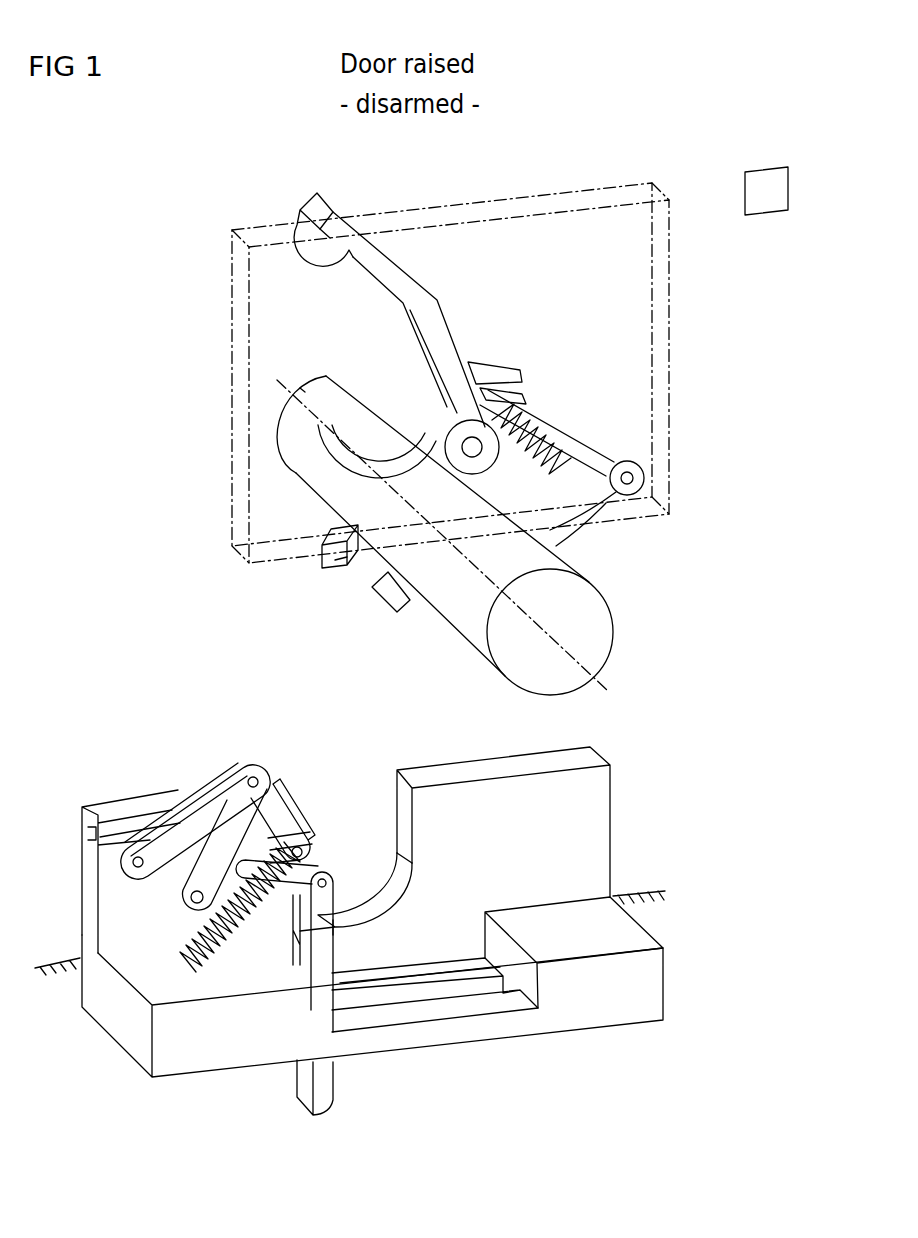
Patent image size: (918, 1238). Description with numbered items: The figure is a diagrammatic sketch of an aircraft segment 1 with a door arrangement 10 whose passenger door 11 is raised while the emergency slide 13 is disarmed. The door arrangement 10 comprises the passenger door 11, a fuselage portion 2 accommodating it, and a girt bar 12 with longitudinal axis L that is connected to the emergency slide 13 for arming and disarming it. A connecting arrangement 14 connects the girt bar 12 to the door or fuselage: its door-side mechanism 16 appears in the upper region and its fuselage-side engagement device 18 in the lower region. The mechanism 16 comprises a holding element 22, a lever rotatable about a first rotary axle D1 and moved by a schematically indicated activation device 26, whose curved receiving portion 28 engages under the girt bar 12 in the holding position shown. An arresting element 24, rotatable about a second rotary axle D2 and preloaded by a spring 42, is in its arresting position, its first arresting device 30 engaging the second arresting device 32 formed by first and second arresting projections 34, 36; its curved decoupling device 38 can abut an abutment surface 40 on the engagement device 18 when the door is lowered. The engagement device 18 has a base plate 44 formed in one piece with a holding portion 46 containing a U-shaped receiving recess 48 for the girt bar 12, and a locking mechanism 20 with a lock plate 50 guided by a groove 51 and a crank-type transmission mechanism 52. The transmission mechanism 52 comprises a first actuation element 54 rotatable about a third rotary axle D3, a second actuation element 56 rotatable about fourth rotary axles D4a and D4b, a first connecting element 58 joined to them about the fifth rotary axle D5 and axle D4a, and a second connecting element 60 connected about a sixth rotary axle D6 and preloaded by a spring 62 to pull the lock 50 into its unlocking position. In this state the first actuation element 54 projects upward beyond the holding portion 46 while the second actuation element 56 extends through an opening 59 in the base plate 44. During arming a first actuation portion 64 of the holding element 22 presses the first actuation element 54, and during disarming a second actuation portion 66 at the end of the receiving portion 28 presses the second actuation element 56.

The aircraft segment 1 is at (510, 320).
The fuselage portion 2 is at (667, 900).
The door arrangement 10 is at (476, 425).
The passenger door 11 is at (590, 195).
The girt bar 12 is at (462, 535).
The emergency slide 13 is at (385, 600).
The connecting arrangement 14 is at (369, 834).
The mechanism 16 is at (604, 429).
The engagement device 18 is at (485, 831).
The locking mechanism 20 is at (202, 798).
The holding element 22 is at (365, 323).
The arresting element 24 is at (578, 447).
The activation device 26 is at (768, 186).
The receiving portion 28 is at (348, 562).
The first arresting device 30 is at (492, 280).
The second arresting device 32 is at (492, 335).
The first arresting projection 34 is at (472, 362).
The second arresting projection 36 is at (507, 393).
The decoupling device 38 is at (570, 532).
The abutment surface 40 is at (637, 940).
The spring 42 is at (603, 513).
The base plate 44 is at (622, 1007).
The holding portion 46 is at (593, 794).
The receiving recess 48 is at (397, 788).
The lock 50 is at (306, 815).
The groove 51 is at (92, 848).
The transmission mechanism 52 is at (202, 798).
The first actuation element 54 is at (178, 830).
The second actuation element 56 is at (333, 1097).
The first connecting element 58 is at (288, 918).
The opening 59 is at (405, 993).
The second connecting element 60 is at (271, 795).
The spring 62 is at (183, 955).
The first actuation portion 64 is at (283, 237).
The second actuation portion 66 is at (327, 552).
The first rotary axle D1 is at (297, 382).
The second rotary axle D2 is at (645, 480).
The third rotary axle D3 is at (110, 823).
The first fourth rotary axle D4a is at (333, 877).
The second fourth rotary axle D4b is at (333, 929).
The fifth rotary axle D5 is at (183, 902).
The sixth rotary axle D6 is at (264, 777).
The longitudinal axis L is at (603, 680).